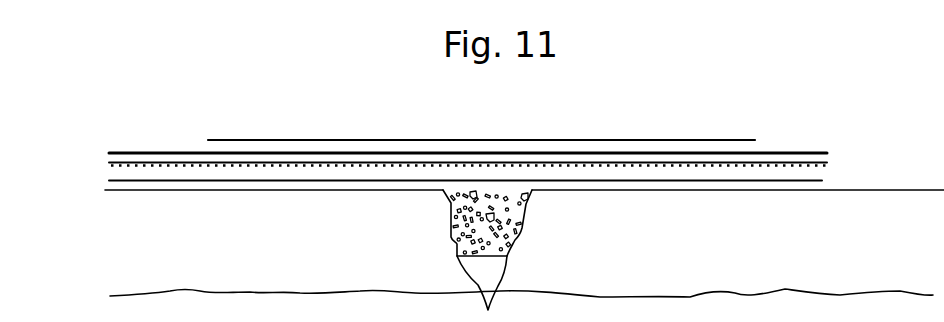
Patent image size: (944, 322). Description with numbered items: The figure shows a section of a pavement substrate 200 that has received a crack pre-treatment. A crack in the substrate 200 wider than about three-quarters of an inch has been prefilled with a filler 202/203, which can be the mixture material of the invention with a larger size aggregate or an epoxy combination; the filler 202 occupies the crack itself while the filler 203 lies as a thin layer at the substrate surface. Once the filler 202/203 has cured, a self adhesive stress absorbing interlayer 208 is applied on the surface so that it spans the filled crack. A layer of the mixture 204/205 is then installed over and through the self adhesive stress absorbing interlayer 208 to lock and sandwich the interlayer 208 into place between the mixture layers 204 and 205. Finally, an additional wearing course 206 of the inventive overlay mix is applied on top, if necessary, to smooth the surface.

The substrate 200 is at (742, 250).
The filler 202 is at (493, 275).
The filler 203 is at (820, 184).
The layer of the mixture 204 is at (817, 172).
The layer of the mixture 205 is at (825, 157).
The wearing course 206 is at (753, 147).
The self adhesive stress absorbing interlayer 208 is at (122, 167).